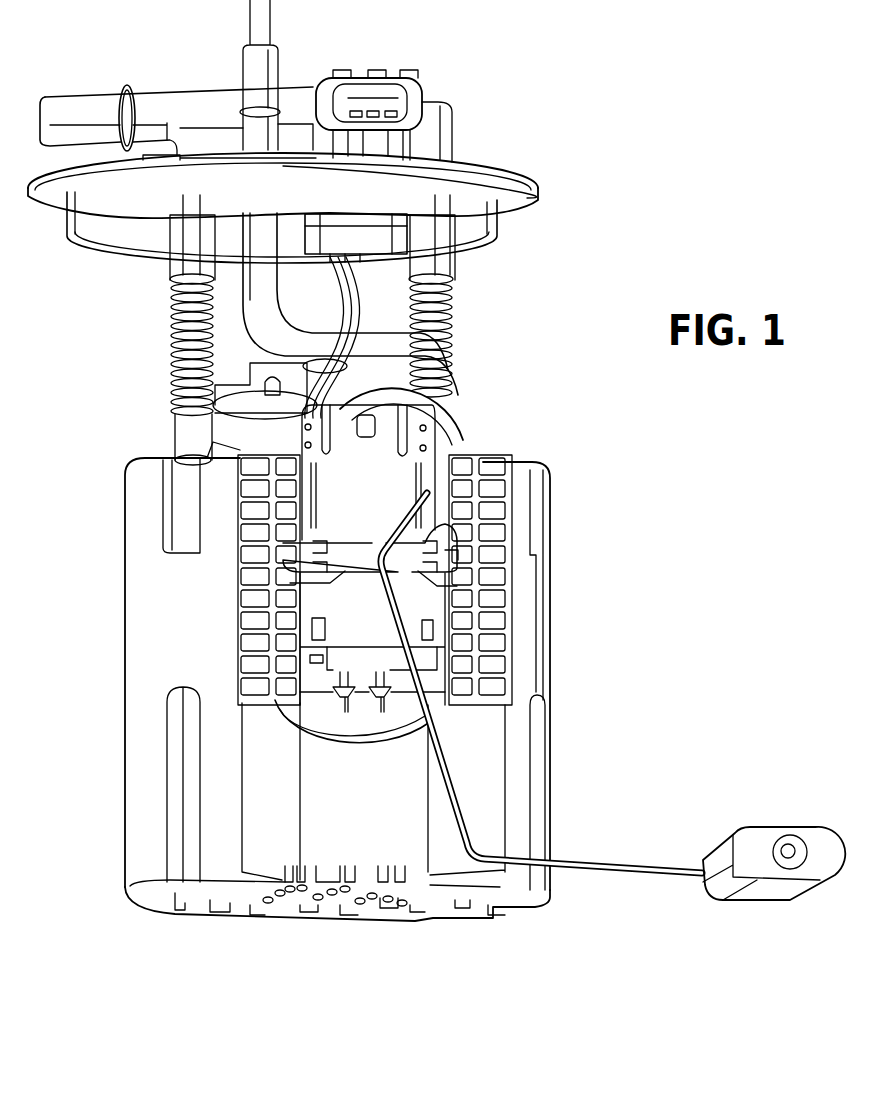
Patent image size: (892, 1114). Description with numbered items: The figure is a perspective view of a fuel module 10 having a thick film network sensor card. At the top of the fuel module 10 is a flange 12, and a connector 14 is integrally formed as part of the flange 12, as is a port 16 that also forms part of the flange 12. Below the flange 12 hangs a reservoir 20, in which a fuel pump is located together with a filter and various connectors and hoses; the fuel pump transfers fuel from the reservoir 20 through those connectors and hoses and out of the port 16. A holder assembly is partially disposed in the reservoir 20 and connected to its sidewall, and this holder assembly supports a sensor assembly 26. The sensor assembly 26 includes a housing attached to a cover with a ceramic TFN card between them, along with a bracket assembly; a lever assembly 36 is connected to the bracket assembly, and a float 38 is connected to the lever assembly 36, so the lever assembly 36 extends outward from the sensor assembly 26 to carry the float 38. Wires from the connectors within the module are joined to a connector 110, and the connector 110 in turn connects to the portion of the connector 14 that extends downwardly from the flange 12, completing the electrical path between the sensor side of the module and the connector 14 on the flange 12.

The fuel module 10 is at (117, 914).
The flange 12 is at (513, 175).
The connector 14 is at (405, 91).
The port 16 is at (85, 98).
The reservoir 20 is at (126, 572).
The sensor assembly 26 is at (437, 517).
The lever assembly 36 is at (612, 866).
The float 38 is at (760, 837).
The connector 110 is at (372, 240).